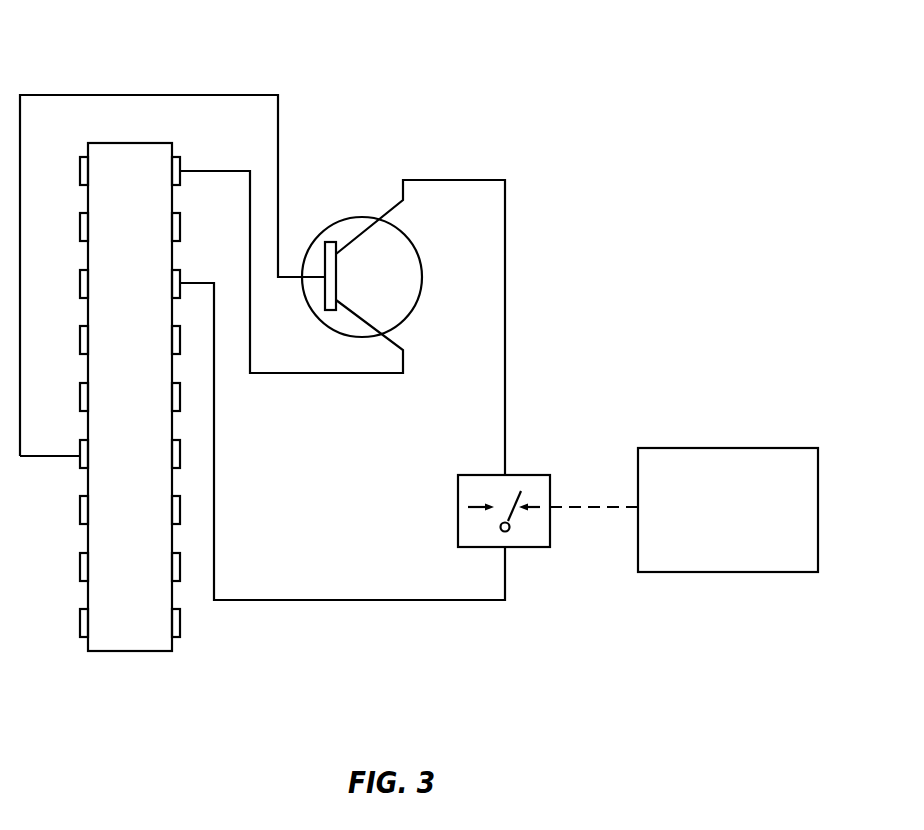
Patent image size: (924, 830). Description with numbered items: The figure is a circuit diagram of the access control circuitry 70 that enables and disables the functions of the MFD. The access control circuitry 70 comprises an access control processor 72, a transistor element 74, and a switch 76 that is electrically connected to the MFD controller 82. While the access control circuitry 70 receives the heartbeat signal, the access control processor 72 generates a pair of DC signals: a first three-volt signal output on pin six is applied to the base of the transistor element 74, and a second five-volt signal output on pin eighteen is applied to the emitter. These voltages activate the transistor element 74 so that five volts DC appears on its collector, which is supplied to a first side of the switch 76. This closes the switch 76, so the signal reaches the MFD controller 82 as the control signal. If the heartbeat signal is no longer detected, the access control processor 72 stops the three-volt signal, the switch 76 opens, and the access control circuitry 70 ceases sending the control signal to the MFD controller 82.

The access control circuitry 70 is at (548, 98).
The access control processor 72 is at (123, 652).
The transistor element 74 is at (363, 218).
The switch 76 is at (532, 475).
The MFD controller 82 is at (728, 510).